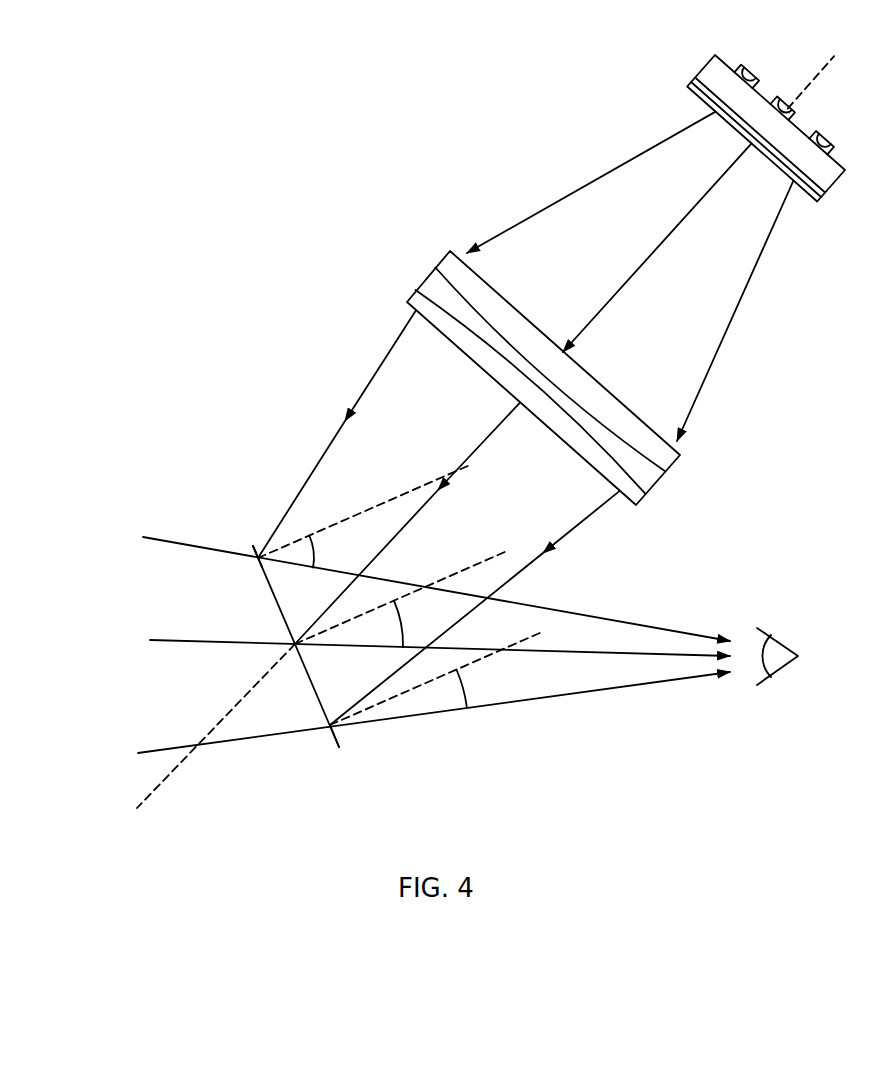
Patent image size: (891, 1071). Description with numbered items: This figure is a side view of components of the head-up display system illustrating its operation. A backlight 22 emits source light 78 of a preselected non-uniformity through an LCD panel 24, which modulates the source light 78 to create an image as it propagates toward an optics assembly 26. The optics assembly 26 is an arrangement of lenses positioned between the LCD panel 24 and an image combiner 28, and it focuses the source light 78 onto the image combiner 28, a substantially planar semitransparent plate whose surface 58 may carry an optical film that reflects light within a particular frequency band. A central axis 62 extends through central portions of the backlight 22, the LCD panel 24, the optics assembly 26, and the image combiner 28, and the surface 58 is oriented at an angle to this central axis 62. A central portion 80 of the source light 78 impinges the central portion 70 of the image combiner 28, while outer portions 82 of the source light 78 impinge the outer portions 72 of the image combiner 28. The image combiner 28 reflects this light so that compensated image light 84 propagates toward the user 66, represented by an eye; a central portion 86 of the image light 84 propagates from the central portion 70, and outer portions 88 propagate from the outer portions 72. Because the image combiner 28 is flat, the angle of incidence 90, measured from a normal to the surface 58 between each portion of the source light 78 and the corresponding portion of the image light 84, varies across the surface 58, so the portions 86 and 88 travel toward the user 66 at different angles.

The backlight 22 is at (735, 112).
The LCD panel 24 is at (688, 85).
The optics assembly 26 is at (514, 340).
The image combiner 28 is at (287, 620).
The surface 58 is at (256, 549).
The central axis 62 is at (148, 797).
The user 66 is at (785, 638).
The central portion of the image combiner 70 is at (292, 620).
The outer portions of the image combiner 72 is at (247, 550).
The source light 78 is at (526, 260).
The central portion of the source light 80 is at (482, 446).
The outer portions of the source light 82 is at (381, 368).
The image light 84 is at (434, 670).
The central portion of the image light 86 is at (628, 653).
The outer portions of the image light 88 is at (650, 627).
The angle of incidence 90 is at (314, 548).